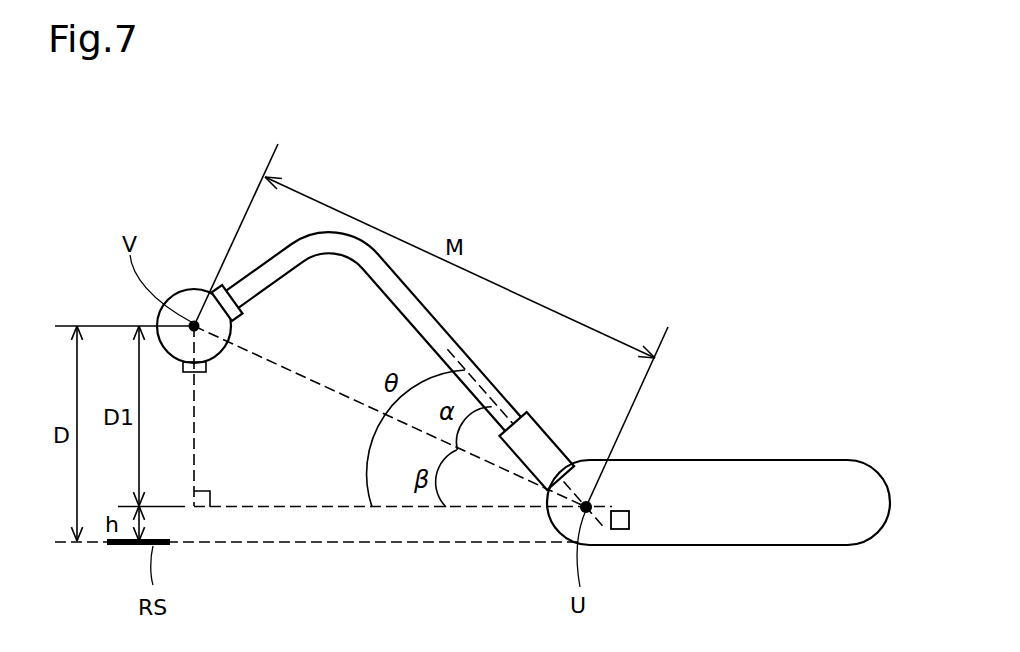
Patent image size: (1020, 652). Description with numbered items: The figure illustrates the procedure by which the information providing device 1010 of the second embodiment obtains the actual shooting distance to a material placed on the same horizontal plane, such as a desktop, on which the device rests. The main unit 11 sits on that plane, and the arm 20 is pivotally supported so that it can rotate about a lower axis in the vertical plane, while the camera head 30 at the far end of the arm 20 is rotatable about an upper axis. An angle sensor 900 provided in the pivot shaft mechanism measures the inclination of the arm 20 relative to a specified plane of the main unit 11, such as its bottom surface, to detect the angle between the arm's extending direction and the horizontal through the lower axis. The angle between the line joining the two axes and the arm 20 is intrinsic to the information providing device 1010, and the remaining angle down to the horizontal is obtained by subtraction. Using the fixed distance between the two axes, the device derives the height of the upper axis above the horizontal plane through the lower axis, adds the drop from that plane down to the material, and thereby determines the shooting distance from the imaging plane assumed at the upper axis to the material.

The main unit 11 is at (803, 460).
The arm 20 is at (380, 255).
The camera head 30 is at (192, 290).
The angle sensor 900 is at (629, 520).
The information providing device 1010 is at (675, 370).